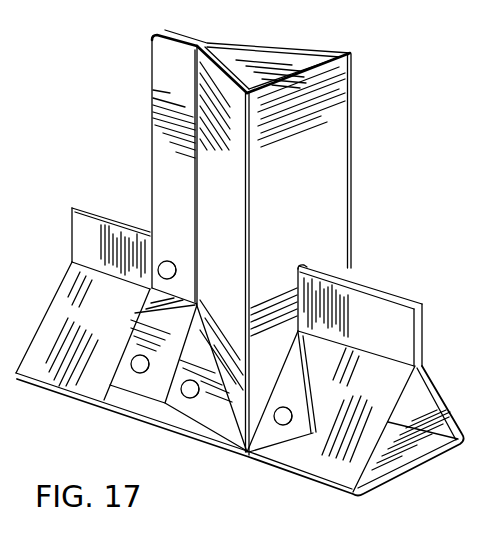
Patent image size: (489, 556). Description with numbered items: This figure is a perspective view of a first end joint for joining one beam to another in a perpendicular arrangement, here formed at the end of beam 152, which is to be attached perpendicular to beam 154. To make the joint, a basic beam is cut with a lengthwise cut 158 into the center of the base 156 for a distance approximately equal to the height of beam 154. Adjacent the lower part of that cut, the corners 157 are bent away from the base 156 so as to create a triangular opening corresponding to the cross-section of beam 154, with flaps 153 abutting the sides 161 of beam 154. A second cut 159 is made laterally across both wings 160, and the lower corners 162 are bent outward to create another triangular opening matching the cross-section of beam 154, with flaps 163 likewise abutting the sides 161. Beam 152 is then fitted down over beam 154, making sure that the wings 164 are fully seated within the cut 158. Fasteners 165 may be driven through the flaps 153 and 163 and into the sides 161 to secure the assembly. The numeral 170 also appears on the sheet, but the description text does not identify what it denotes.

The beam 152 is at (365, 129).
The flaps 153 is at (244, 462).
The beam 154 is at (466, 403).
The base 156 is at (335, 207).
The corners 157 is at (309, 428).
The lengthwise cut 158 is at (308, 267).
The second cut 159 is at (143, 309).
The wings 160 is at (168, 31).
The sides 161 is at (360, 443).
The lower corners 162 is at (121, 381).
The flaps 163 is at (208, 419).
The wings 164 is at (400, 326).
The fasteners 165 is at (160, 262).
The assembly 170 is at (476, 196).